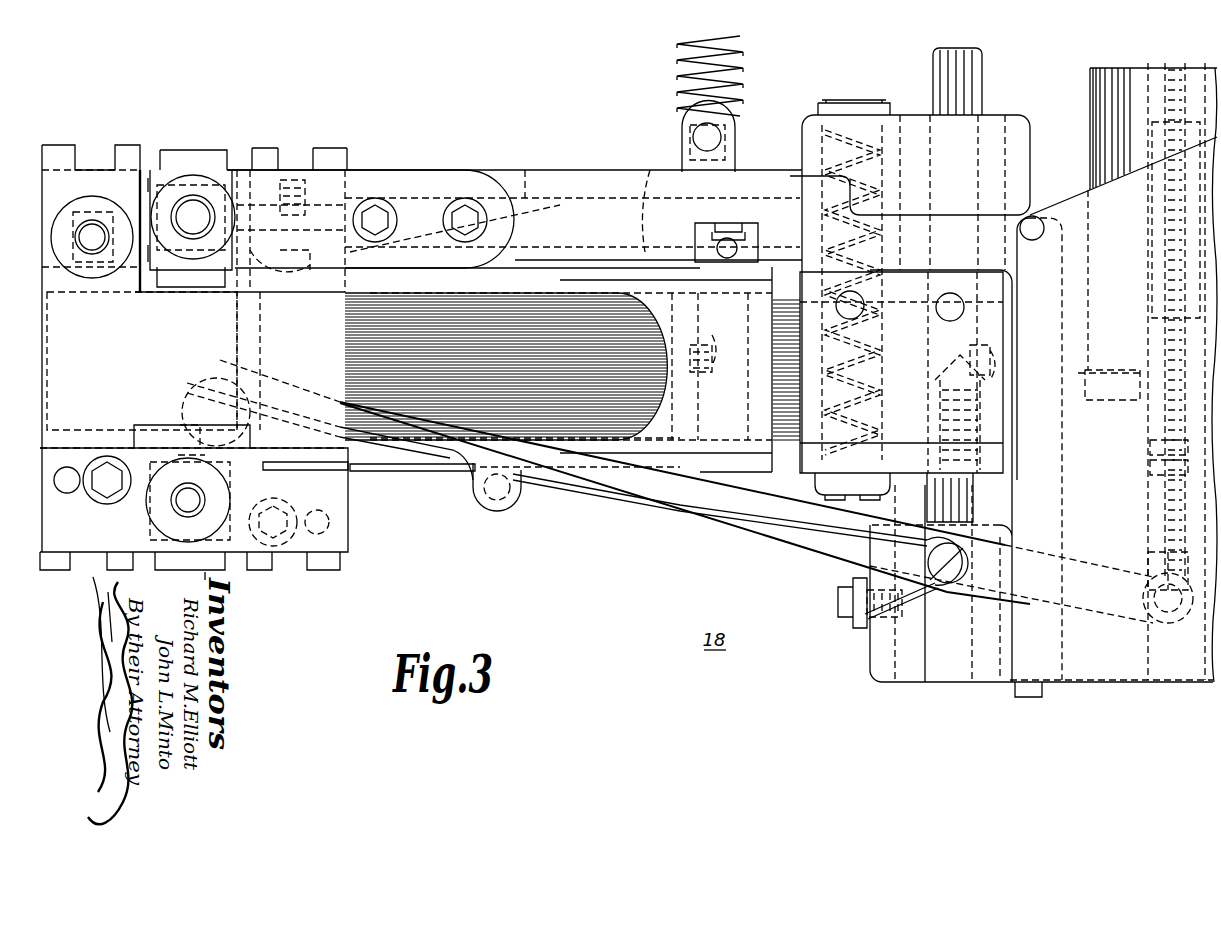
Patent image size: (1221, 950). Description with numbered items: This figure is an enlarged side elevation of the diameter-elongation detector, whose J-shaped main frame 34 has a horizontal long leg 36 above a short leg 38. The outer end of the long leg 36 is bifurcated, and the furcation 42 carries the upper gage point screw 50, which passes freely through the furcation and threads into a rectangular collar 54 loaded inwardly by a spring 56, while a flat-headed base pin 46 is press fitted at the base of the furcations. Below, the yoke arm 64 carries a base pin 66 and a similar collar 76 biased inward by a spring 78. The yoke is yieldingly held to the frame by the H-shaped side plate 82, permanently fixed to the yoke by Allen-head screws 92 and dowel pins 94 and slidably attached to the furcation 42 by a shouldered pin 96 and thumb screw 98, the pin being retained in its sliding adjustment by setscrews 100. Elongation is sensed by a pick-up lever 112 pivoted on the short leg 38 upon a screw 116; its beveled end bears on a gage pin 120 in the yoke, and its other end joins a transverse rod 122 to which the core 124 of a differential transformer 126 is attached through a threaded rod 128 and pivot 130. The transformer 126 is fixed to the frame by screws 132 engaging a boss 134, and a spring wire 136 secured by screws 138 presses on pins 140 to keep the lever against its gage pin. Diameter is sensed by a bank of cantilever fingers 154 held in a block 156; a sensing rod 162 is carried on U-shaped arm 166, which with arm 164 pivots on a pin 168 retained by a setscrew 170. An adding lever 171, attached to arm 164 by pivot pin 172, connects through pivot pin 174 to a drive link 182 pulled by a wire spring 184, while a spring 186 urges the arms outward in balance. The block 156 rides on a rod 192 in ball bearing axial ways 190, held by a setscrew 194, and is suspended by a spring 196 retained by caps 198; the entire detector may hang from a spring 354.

The main frame 34 is at (1030, 188).
The long leg 36 is at (588, 172).
The short leg 38 is at (990, 682).
The furcation 42 is at (140, 168).
The base pin 46 is at (241, 190).
The gage point screw 50 is at (185, 180).
The rectangular collar 54 is at (215, 150).
The spring 56 is at (160, 170).
The arm 64 is at (135, 445).
The base pin 66 is at (232, 562).
The rectangular collar 76 is at (215, 440).
The spring 78 is at (153, 450).
The side plate 82 is at (90, 152).
The Allen-head screws 92 is at (107, 500).
The dowel pins 94 is at (65, 492).
The shouldered pin 96 is at (293, 217).
The thumb screw 98 is at (93, 197).
The setscrews 100 is at (293, 175).
The elongation pick-up lever 112 is at (618, 492).
The screw 116 is at (948, 586).
The gage pin 120 is at (180, 446).
The transverse rod 122 is at (1160, 625).
The core 124 is at (1150, 240).
The differential transformer 126 is at (1090, 98).
The threaded rod 128 is at (1140, 400).
The pivot 130 is at (1150, 560).
The screws 132 is at (1150, 448).
The boss 134 is at (1145, 470).
The spring wire 136 is at (553, 490).
The screws 138 is at (842, 620).
The pins 140 is at (493, 494).
The bank of cantilever fingers 154 is at (345, 350).
The block 156 is at (1003, 328).
The sensing rod 162 is at (262, 346).
The U-shaped arm 164 is at (650, 262).
The U-shaped arm 166 is at (658, 292).
The pin 168 is at (740, 472).
The setscrew 170 is at (705, 340).
The adding lever 171 is at (533, 220).
The pivot pin 172 is at (500, 206).
The pivot pin 174 is at (737, 232).
The drive link 182 is at (758, 248).
The wire spring 184 is at (651, 200).
The spring 186 is at (432, 473).
The ball bearing axial ways 190 is at (908, 118).
The rod 192 is at (982, 82).
The setscrew 194 is at (1000, 385).
The spring 196 is at (825, 170).
The caps 198 is at (852, 100).
The spring 354 is at (677, 72).